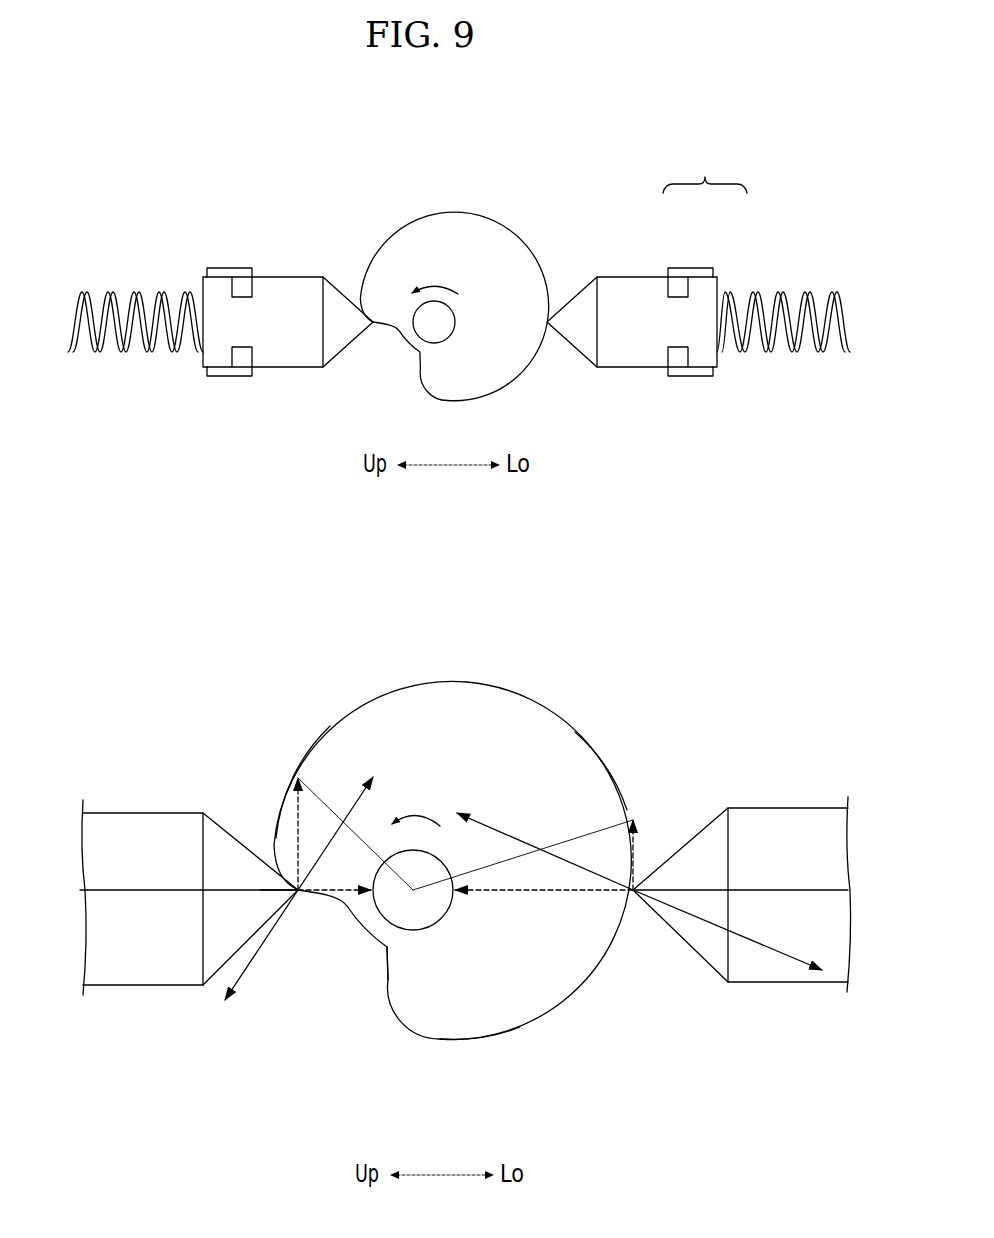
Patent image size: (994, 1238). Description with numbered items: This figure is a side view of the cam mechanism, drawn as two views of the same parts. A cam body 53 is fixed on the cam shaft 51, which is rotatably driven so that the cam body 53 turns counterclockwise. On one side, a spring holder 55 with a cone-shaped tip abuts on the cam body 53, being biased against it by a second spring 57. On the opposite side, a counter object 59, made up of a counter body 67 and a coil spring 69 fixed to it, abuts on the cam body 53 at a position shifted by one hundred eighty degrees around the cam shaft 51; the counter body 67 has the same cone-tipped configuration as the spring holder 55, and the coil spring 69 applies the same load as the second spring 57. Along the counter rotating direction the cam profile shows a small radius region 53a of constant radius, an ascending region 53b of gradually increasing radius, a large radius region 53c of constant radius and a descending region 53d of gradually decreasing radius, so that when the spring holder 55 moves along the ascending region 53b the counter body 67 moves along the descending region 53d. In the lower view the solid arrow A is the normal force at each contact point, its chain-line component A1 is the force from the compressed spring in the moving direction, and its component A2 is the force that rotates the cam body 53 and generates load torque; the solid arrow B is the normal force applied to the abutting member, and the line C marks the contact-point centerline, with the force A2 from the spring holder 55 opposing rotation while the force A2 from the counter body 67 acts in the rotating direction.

The cam shaft 51 is at (425, 331).
The cam body 53 is at (473, 223).
The small radius region 53a is at (377, 948).
The ascending region 53b is at (308, 735).
The large radius region 53c is at (579, 735).
The descending region 53d is at (478, 1040).
The spring holder 55 is at (279, 278).
The second spring 57 is at (140, 293).
The counter object 59 is at (699, 569).
The counter body 67 is at (645, 278).
The coil spring 69 is at (754, 292).
The normal force A is at (350, 823).
The force in the moving direction A1 is at (328, 893).
The force to rotate the cam body A2 is at (295, 826).
The normal force applied to the spring holder B is at (247, 975).
The center line C is at (268, 890).